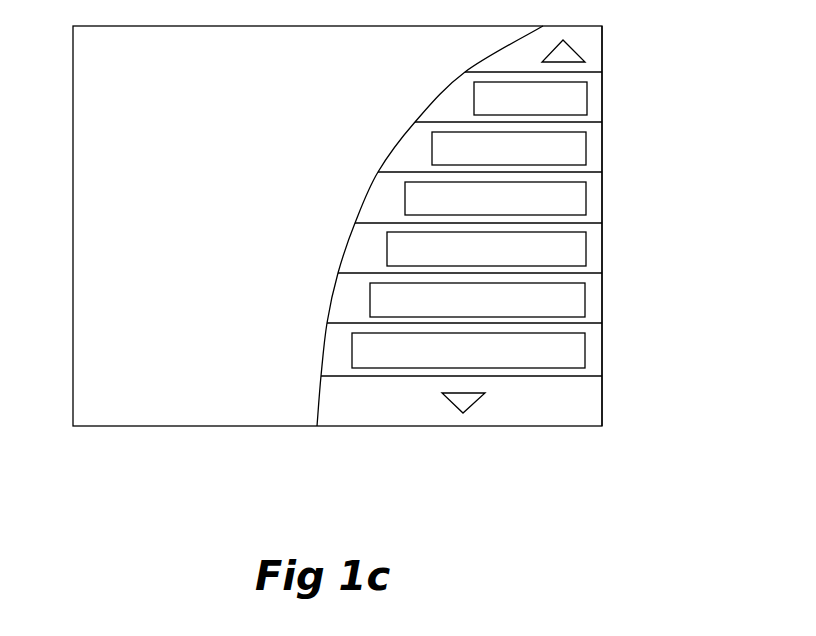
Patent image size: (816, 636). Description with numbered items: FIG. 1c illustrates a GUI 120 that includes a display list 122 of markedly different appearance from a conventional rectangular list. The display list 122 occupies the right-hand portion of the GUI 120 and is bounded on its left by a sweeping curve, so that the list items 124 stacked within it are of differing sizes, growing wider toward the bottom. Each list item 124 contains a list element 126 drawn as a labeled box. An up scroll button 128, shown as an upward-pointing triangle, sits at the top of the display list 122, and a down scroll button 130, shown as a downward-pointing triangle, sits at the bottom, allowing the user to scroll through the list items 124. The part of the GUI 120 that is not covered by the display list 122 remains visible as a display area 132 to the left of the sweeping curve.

The GUI 120 is at (342, 507).
The display list 122 is at (507, 427).
The list items 124 is at (602, 102).
The list elements 126 is at (548, 111).
The up scroll button 128 is at (603, 50).
The down scroll button 130 is at (602, 407).
The display area 132 is at (228, 228).